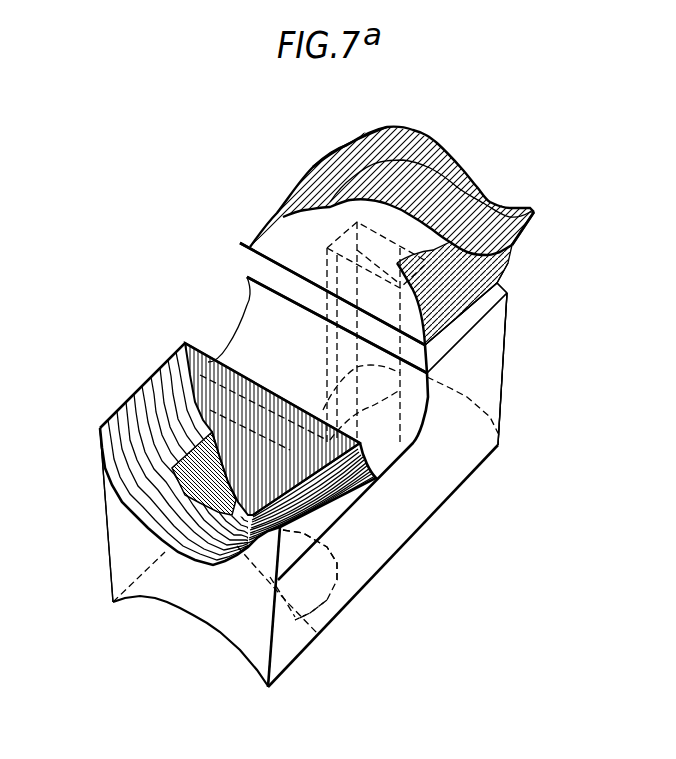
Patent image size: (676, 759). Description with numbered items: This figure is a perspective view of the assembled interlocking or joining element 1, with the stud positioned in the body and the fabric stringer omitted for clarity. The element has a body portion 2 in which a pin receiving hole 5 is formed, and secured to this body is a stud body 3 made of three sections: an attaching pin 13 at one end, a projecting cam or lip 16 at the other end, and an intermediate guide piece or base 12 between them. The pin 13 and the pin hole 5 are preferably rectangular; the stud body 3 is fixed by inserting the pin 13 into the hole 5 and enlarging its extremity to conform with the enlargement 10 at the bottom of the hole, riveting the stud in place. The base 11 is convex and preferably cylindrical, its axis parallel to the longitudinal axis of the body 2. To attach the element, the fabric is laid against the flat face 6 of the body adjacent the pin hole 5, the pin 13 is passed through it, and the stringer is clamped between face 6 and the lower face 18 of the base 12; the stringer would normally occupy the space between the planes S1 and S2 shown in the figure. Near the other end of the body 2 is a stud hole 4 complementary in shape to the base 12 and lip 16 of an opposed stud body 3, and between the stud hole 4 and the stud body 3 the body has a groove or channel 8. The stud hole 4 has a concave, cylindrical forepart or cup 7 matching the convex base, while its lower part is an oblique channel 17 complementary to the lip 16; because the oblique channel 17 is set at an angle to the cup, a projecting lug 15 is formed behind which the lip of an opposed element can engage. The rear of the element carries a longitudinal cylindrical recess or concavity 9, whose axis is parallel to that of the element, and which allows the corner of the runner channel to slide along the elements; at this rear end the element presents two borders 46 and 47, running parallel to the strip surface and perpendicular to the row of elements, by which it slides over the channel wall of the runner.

The assembled interlocking or joining element 1 is at (363, 553).
The body portion 2 is at (460, 465).
The stud body 3 is at (448, 152).
The stud hole 4 is at (153, 430).
The pin receiving hole 5 is at (500, 353).
The face of the element body 6 is at (463, 320).
The concave forepart or cup 7 is at (173, 403).
The groove or channel 8 is at (247, 348).
The longitudinal recess or concavity 9 is at (180, 607).
The enlargement 10 is at (423, 422).
The base 11 is at (342, 170).
The intermediate guide piece or base 12 is at (312, 228).
The attaching pin 13 is at (495, 283).
The projecting lug 15 is at (283, 530).
The projecting cam or lip 16 is at (533, 213).
The oblique channel 17 is at (270, 575).
The lower face of the base 18 is at (467, 305).
The border 46 is at (113, 602).
The border 47 is at (268, 687).
The plane S1 is at (247, 247).
The plane S2 is at (247, 277).